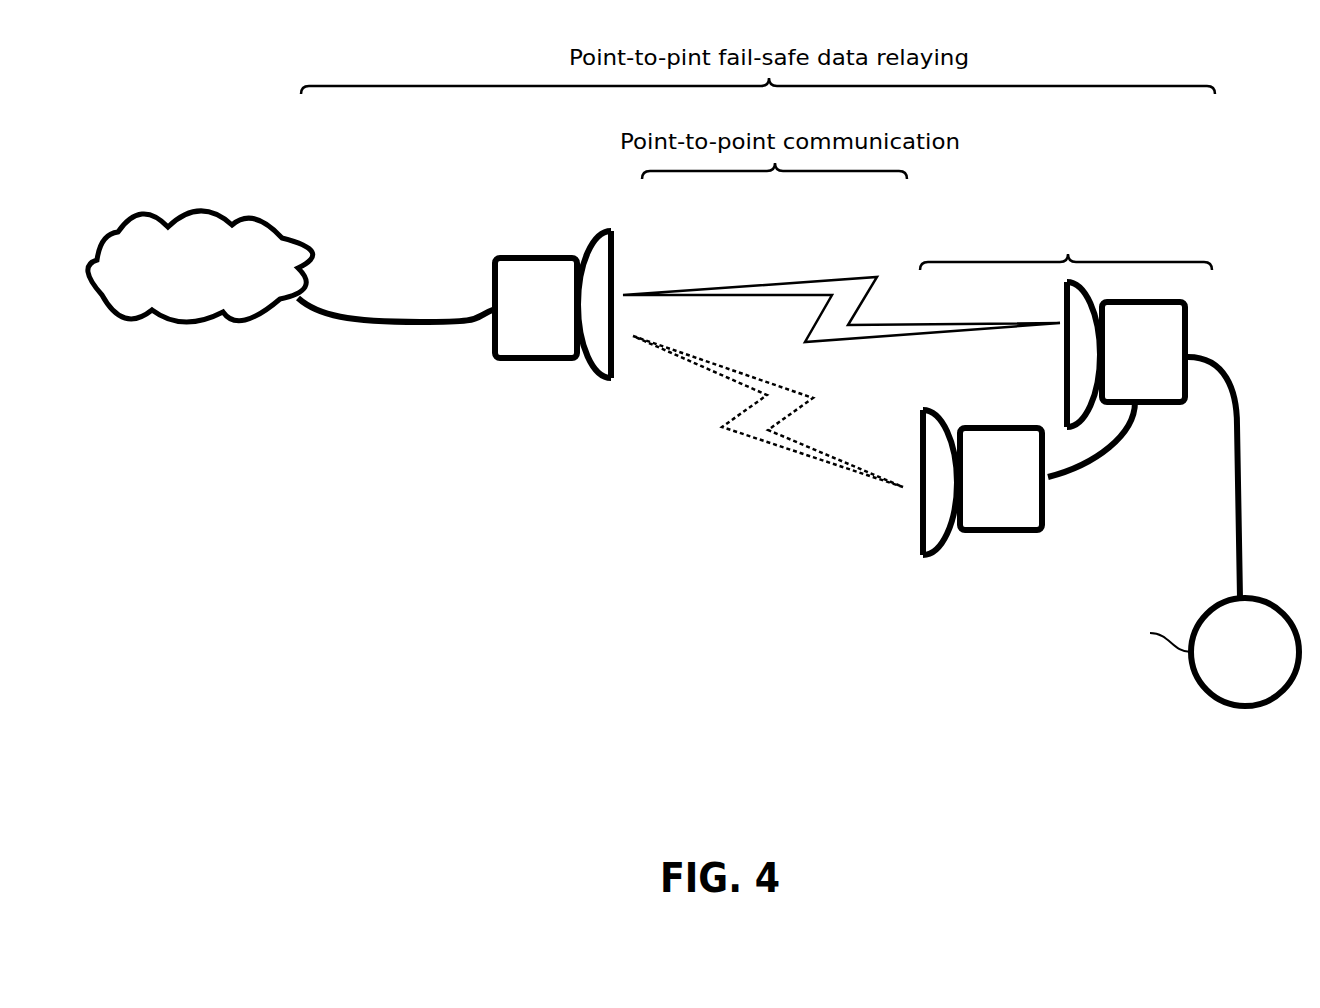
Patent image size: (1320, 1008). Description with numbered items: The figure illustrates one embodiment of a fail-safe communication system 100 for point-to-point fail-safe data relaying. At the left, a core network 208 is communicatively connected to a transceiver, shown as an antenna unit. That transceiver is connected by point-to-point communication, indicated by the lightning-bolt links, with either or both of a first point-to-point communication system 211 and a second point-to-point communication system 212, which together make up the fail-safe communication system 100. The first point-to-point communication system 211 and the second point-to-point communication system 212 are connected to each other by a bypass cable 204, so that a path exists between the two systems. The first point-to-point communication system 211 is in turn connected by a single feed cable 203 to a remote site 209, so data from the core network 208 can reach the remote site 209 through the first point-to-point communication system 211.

The fail-safe communication system 100 is at (1072, 388).
The core network 208 is at (220, 294).
The first point-to-point communication system 211 is at (1123, 389).
The second point-to-point communication system 212 is at (1020, 517).
The single feed cable 203 is at (1239, 477).
The bypass cable 204 is at (1097, 440).
The remote site 209 is at (1223, 666).